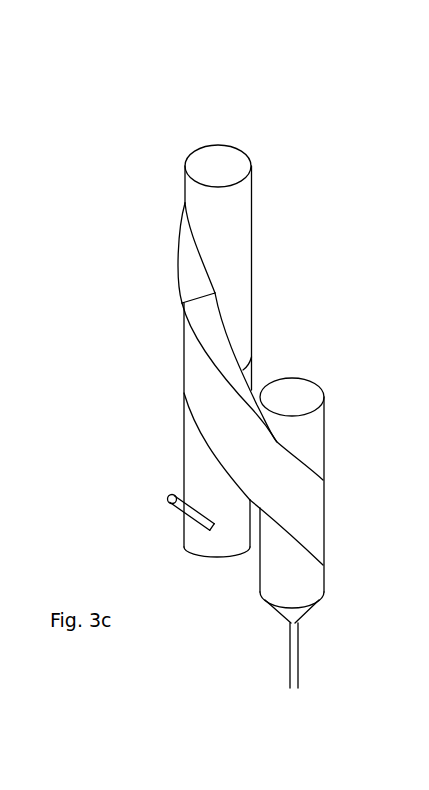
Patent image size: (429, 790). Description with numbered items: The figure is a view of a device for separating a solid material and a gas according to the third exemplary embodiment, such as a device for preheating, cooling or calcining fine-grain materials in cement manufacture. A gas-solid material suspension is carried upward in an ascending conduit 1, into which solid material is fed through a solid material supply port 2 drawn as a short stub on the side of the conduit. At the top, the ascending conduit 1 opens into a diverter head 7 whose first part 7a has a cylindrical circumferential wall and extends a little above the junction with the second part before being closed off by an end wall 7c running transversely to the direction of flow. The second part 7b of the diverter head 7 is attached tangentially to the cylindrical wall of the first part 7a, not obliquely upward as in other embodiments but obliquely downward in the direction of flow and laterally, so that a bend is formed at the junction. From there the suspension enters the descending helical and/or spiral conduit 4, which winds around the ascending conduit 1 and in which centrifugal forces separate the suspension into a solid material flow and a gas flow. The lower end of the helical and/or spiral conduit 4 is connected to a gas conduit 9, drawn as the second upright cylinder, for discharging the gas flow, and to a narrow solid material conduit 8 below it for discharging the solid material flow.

The diverter head 7 is at (161, 146).
The first part of the diverter head 7a is at (233, 257).
The second part of the diverter head 7b is at (187, 268).
The end wall 7c is at (225, 165).
The helical and/or spiral conduit 4 is at (217, 412).
The ascending conduit 1 is at (235, 534).
The solid material supply port 2 is at (168, 495).
The gas conduit 9 is at (303, 390).
The solid material conduit 8 is at (294, 657).